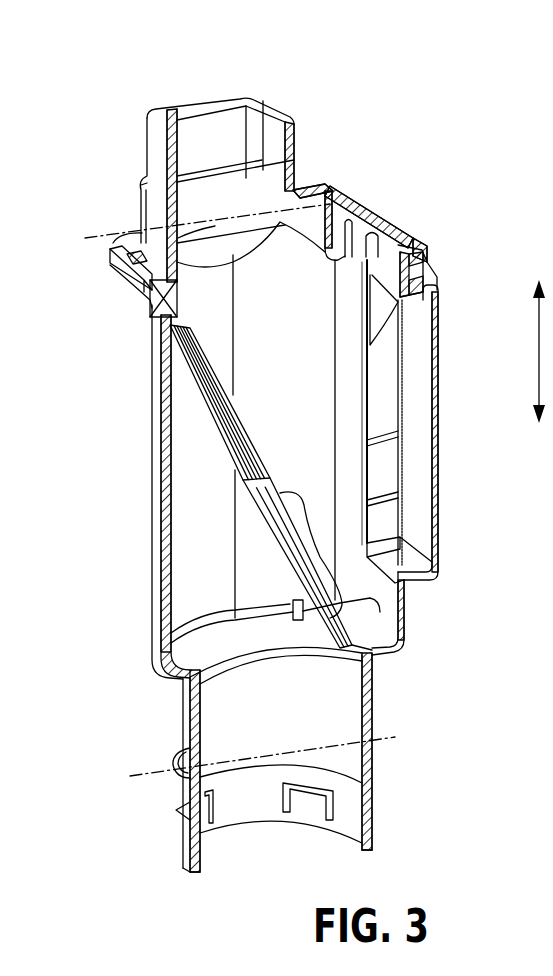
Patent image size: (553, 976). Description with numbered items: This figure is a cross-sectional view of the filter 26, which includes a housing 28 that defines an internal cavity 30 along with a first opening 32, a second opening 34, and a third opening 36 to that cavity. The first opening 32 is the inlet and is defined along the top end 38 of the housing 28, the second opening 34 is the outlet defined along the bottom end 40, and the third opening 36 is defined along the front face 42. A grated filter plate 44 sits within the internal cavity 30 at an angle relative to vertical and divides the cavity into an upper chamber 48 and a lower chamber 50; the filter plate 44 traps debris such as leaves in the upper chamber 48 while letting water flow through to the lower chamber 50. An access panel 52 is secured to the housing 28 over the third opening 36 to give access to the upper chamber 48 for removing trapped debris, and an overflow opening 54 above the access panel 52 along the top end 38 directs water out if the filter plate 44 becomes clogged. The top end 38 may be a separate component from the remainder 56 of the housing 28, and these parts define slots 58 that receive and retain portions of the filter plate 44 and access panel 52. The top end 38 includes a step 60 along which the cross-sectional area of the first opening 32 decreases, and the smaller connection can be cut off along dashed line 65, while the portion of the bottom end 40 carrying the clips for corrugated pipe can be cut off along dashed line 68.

The filter 26 is at (133, 84).
The housing 28 is at (146, 445).
The internal cavity 30 is at (252, 453).
The first opening 32 is at (232, 203).
The second opening 34 is at (288, 718).
The third opening 36 is at (412, 300).
The top end 38 is at (165, 146).
The bottom end 40 is at (190, 724).
The front face 42 is at (405, 612).
The filter plate 44 is at (250, 428).
The upper chamber 48 is at (322, 312).
The lower chamber 50 is at (232, 559).
The access panel 52 is at (440, 485).
The overflow opening 54 is at (347, 198).
The remainder of the housing 56 is at (155, 556).
The slots 58 is at (100, 267).
The step 60 is at (300, 181).
The dashed line 65 is at (108, 236).
The dashed line 68 is at (392, 738).